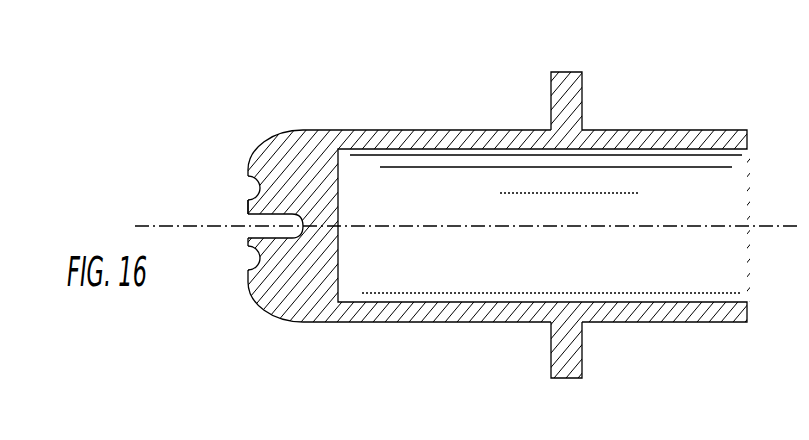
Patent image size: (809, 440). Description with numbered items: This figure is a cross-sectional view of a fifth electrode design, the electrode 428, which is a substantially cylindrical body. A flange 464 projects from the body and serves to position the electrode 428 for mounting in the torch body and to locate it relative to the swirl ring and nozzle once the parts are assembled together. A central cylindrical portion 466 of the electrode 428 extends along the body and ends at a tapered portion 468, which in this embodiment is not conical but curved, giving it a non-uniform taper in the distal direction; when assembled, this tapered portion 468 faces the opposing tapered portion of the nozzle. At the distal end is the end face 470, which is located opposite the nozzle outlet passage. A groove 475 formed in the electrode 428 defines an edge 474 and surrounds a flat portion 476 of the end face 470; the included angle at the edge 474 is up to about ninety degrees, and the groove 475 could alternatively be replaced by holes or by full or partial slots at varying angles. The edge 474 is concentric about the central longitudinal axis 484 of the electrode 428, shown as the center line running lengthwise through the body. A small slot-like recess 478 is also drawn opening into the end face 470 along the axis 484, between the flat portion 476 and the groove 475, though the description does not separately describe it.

The electrode 428 is at (407, 46).
The flange 464 is at (562, 72).
The central cylindrical portion 466 is at (468, 130).
The tapered portion 468 is at (304, 131).
The end face 470 is at (244, 205).
The edge 474 is at (248, 183).
The groove 475 is at (247, 190).
The flat portion 476 is at (248, 250).
The central slot 478 is at (257, 233).
The longitudinal axis 484 is at (478, 226).